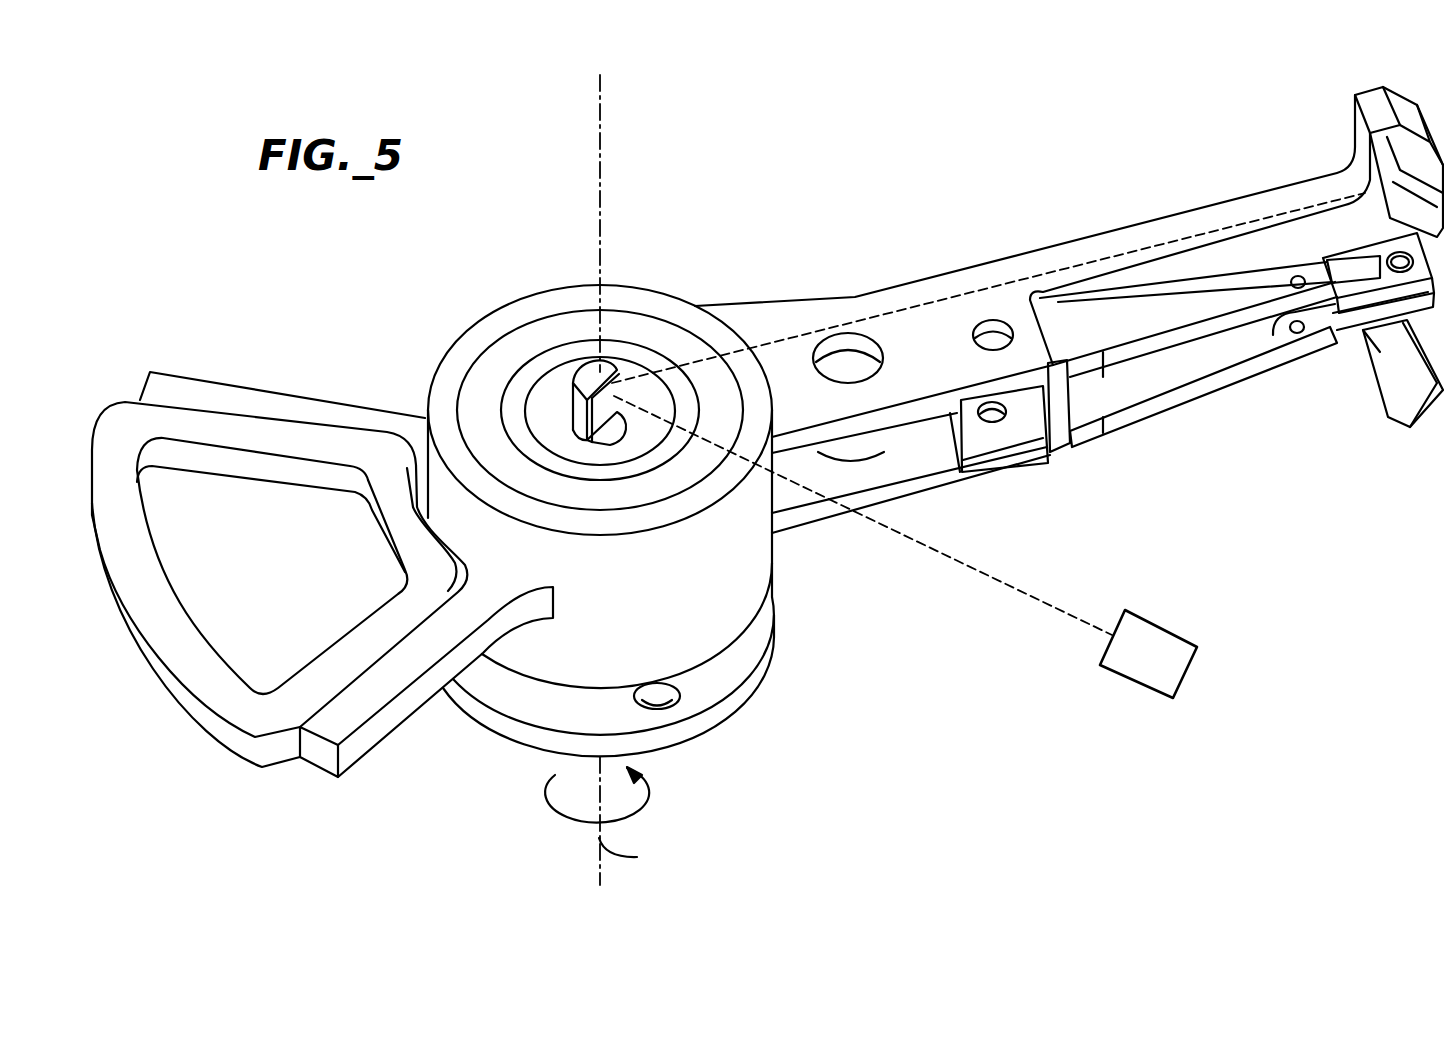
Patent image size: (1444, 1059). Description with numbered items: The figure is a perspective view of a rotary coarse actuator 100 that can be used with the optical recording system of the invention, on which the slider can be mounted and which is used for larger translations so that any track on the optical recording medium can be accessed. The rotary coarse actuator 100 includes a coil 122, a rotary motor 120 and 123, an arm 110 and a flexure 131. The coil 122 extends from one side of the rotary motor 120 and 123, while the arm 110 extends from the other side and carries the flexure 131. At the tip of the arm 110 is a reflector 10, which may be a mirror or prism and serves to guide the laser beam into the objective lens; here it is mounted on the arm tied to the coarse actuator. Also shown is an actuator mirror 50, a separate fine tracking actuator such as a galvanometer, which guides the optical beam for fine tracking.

The reflector 10 is at (1390, 368).
The actuator mirror 50 is at (588, 372).
The rotary coarse actuator 100 is at (822, 630).
The arm 110 is at (928, 498).
The rotary motor 120 is at (648, 290).
The coil 122 is at (120, 400).
The rotary motor 123 is at (513, 415).
The flexure 131 is at (1087, 373).